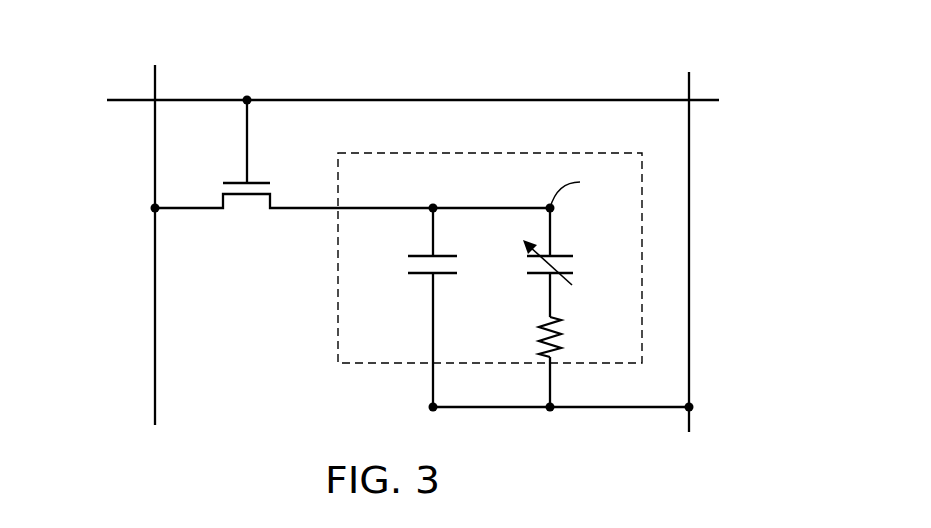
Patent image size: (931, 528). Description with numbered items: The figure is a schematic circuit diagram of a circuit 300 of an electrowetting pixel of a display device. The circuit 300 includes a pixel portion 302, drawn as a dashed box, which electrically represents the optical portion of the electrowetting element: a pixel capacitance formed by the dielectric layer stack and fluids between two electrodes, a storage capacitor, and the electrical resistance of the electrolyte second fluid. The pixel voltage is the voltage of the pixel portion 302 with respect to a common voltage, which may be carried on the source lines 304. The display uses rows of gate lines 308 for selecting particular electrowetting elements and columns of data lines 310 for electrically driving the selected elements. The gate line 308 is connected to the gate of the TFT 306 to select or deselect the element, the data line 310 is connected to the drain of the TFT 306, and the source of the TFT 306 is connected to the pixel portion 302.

The circuit 300 is at (666, 64).
The pixel portion 302 is at (338, 282).
The source lines 304 is at (689, 287).
The TFT 306 is at (248, 209).
The gate lines 308 is at (107, 100).
The data lines 310 is at (155, 363).